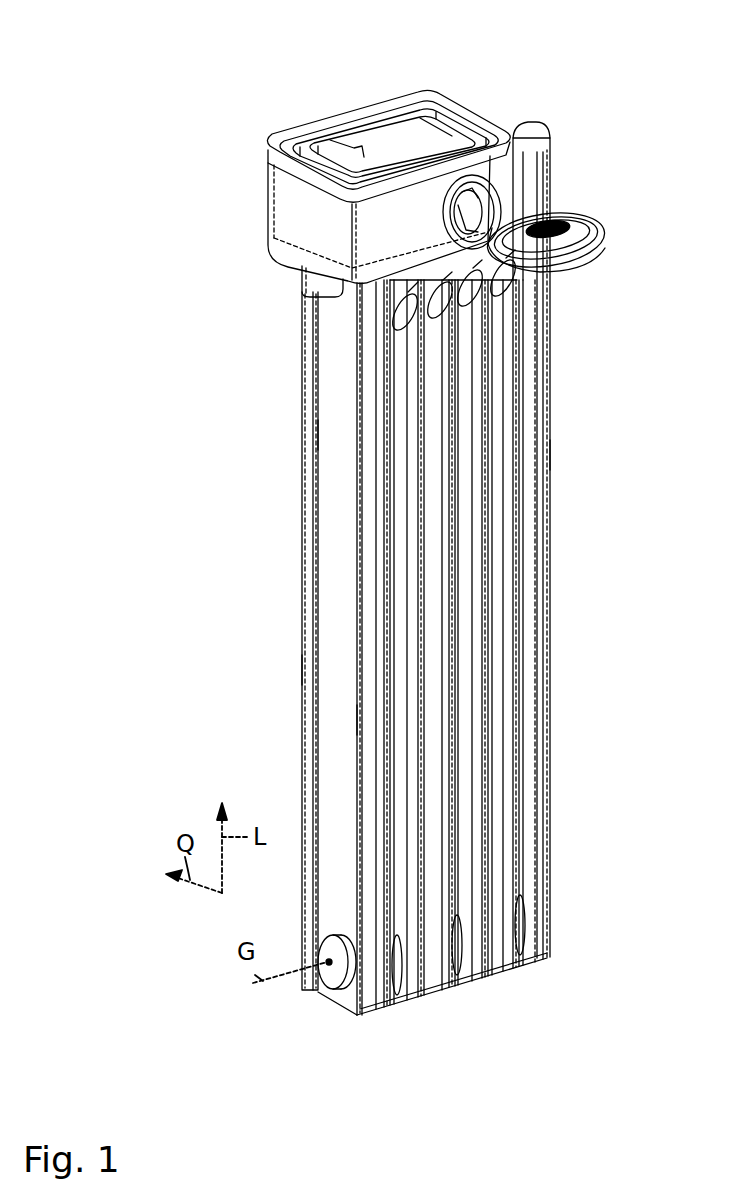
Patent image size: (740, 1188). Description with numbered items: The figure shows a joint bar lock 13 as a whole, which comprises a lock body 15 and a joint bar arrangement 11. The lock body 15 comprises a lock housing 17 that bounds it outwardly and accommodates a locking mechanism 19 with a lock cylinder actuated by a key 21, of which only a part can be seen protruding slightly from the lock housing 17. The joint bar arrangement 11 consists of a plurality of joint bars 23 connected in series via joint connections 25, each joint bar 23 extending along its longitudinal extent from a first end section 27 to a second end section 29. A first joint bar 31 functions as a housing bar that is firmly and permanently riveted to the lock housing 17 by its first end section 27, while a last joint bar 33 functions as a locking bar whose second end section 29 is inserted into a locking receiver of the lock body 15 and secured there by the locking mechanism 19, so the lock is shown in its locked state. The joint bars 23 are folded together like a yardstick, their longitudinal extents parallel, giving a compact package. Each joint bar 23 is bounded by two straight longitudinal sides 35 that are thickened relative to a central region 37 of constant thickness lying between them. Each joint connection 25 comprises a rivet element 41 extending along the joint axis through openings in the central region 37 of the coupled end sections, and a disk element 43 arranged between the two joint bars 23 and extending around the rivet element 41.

The joint bar arrangement 11 is at (228, 570).
The joint bar lock 13 is at (192, 127).
The lock body 15 is at (312, 218).
The lock housing 17 is at (456, 120).
The locking mechanism 19 is at (490, 210).
The key 21 is at (578, 228).
The joint bars 23 is at (377, 572).
The joint connections 25 is at (328, 968).
The first end section 27 is at (532, 126).
The second end section 29 is at (325, 296).
The first joint bar 31 is at (553, 455).
The last joint bar 33 is at (328, 434).
The longitudinal sides 35 is at (300, 670).
The central region 37 is at (333, 720).
The rivet element 41 is at (338, 975).
The disk element 43 is at (424, 345).